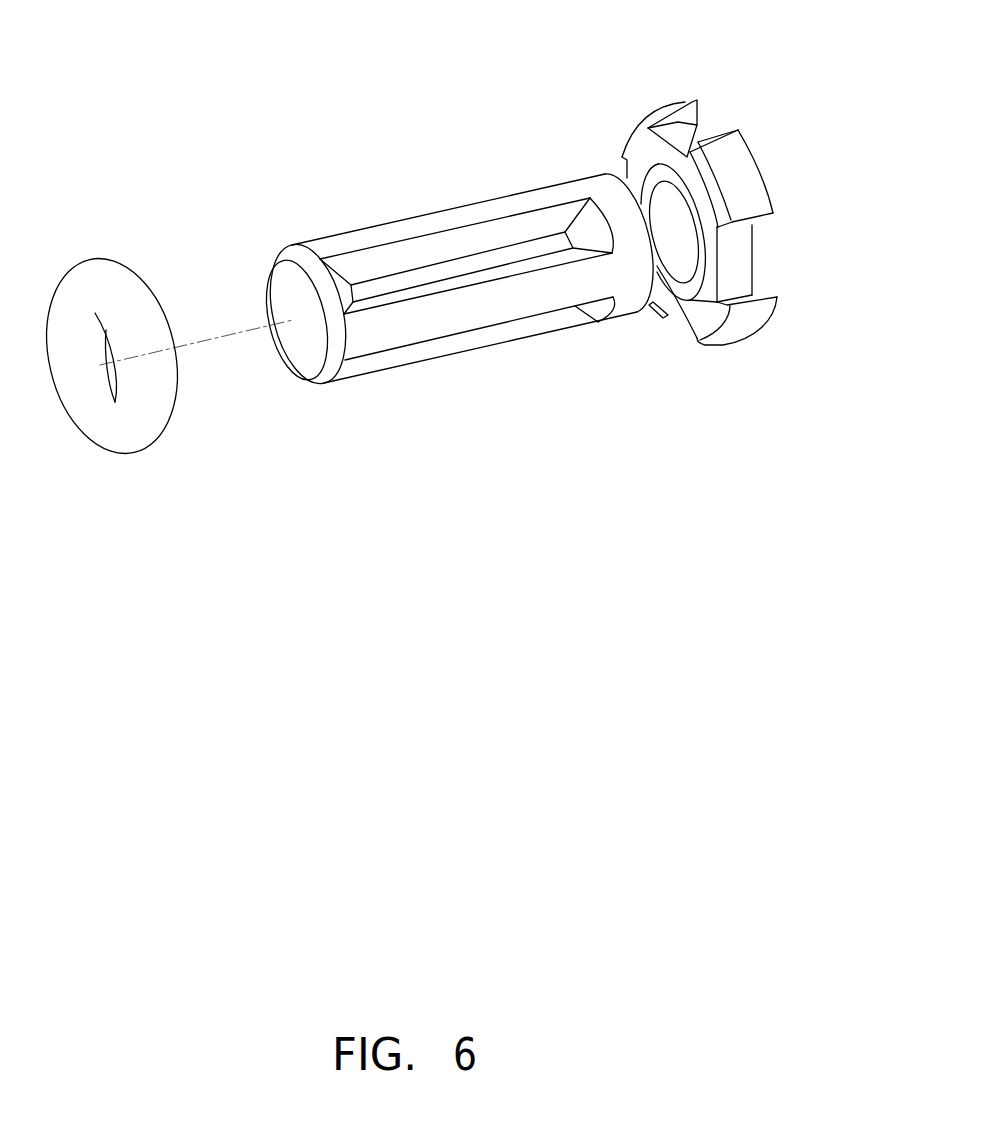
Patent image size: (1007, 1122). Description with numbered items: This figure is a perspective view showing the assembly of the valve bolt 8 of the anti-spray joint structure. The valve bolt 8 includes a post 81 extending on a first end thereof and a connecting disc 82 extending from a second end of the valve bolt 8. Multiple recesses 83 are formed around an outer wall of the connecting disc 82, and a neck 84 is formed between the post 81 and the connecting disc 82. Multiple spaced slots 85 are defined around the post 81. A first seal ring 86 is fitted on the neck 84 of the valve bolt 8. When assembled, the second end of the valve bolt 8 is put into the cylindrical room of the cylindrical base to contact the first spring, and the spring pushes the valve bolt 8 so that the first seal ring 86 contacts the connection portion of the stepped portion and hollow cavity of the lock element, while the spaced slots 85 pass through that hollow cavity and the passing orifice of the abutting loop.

The valve bolt 8 is at (311, 203).
The post 81 is at (278, 305).
The connecting disc 82 is at (748, 325).
The recesses 83 is at (743, 263).
The neck 84 is at (683, 318).
The spaced slots 85 is at (443, 273).
The first seal ring 86 is at (100, 280).